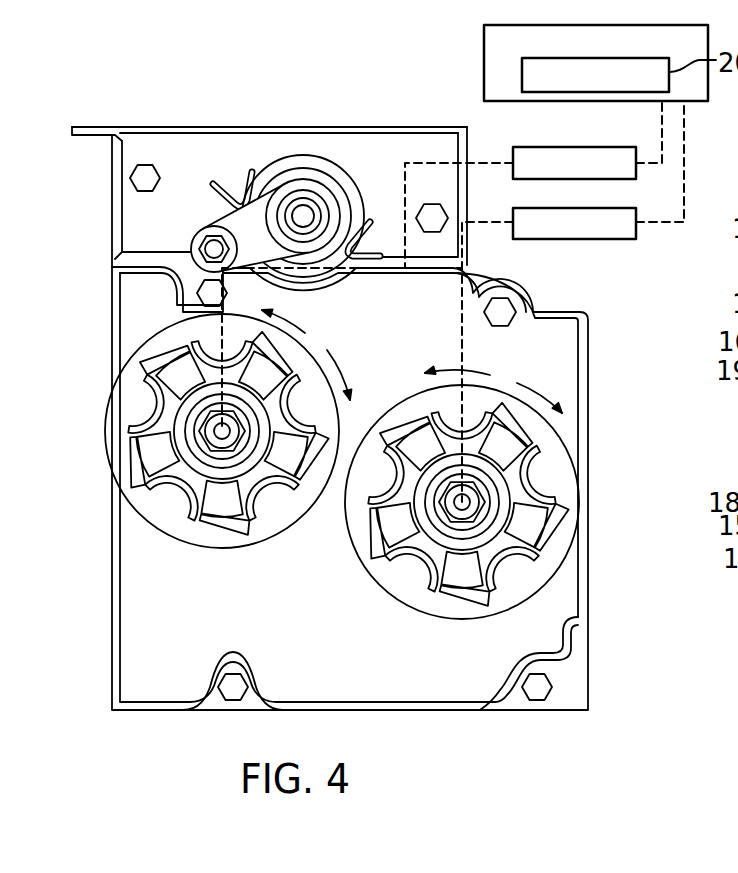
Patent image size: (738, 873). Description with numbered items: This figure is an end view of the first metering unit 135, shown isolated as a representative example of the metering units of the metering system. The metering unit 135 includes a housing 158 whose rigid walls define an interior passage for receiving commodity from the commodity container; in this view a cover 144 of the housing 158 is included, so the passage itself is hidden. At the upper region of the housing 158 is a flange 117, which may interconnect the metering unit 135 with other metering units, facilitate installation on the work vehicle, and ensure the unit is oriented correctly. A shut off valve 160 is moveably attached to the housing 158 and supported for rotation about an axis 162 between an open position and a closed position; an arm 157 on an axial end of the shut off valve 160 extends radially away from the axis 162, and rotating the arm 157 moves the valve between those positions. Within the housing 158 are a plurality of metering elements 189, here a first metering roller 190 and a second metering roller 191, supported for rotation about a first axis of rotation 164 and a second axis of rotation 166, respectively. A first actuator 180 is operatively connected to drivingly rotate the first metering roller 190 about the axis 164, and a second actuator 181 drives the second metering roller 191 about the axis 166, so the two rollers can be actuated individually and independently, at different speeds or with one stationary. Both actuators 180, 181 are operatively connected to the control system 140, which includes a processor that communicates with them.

The flange 117 is at (92, 134).
The first metering unit 135 is at (302, 100).
The control system 140 is at (484, 60).
The cover 144 is at (337, 644).
The arm 157 is at (232, 225).
The housing 158 is at (455, 136).
The shut off valve 160 is at (307, 197).
The axis 162 is at (302, 210).
The first axis of rotation 164 is at (210, 428).
The second axis of rotation 166 is at (467, 507).
The first actuator 180 is at (573, 147).
The second actuator 181 is at (573, 240).
The metering elements 189 is at (408, 528).
The first metering roller 190 is at (213, 425).
The second metering roller 191 is at (537, 477).